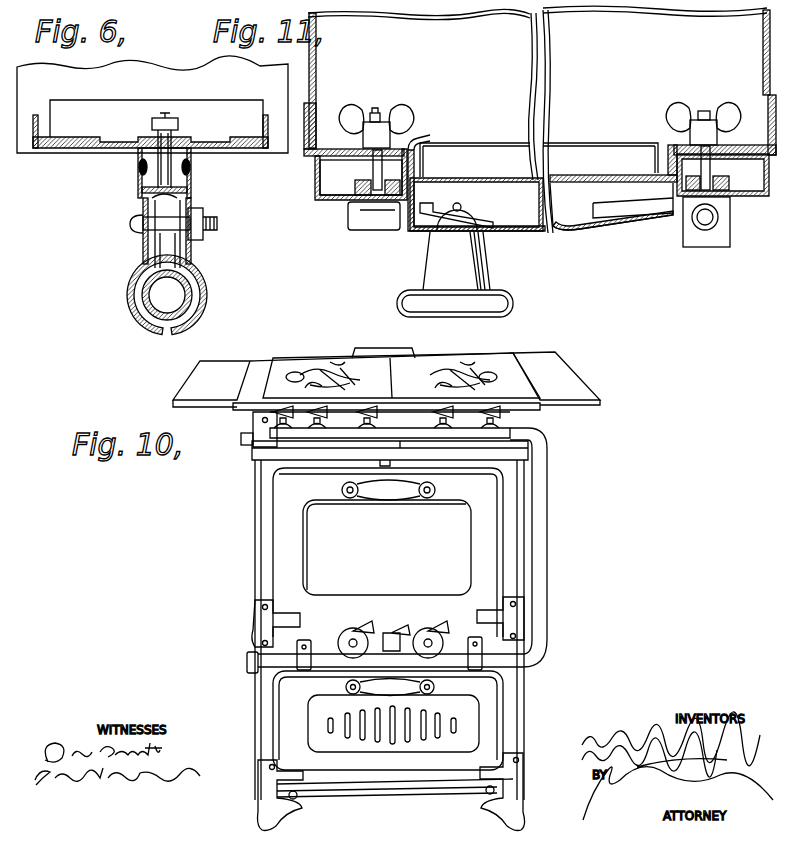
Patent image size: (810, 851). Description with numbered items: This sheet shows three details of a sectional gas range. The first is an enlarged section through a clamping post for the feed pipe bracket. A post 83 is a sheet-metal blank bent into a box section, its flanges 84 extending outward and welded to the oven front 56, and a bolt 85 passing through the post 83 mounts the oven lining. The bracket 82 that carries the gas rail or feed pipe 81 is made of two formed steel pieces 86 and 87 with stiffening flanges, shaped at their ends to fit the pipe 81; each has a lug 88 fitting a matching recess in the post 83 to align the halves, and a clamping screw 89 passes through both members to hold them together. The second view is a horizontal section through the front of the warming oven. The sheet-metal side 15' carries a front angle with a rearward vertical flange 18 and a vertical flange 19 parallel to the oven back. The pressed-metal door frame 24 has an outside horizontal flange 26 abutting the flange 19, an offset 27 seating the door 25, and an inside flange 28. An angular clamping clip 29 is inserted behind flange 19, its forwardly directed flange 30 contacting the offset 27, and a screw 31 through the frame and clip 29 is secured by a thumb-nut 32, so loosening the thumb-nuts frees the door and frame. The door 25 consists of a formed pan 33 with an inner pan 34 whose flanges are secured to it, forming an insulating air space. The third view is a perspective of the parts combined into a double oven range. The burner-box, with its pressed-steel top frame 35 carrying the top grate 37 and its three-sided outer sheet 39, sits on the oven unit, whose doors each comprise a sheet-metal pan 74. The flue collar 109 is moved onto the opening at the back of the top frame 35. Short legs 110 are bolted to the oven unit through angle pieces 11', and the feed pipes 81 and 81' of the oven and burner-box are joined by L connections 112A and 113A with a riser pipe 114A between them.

In FIG. 6, the oven front 56 is at (92, 155).
In FIG. 6, the gas rail or feed pipe 81 is at (147, 315).
In FIG. 10, the gas rail or feed pipe 81 is at (409, 684).
In FIG. 6, the post 83 is at (178, 183).
In FIG. 6, the flange 84 is at (139, 72).
In FIG. 6, the bolt 85 is at (175, 116).
In FIG. 6, the formed steel piece 86 is at (192, 255).
In FIG. 6, the formed steel piece 87 is at (143, 254).
In FIG. 6, the lug 88 is at (130, 193).
In FIG. 6, the clamping screw 89 is at (132, 231).
In FIG. 11, the bracket or support 82 is at (238, 6).
In FIG. 11, the side 15' is at (539, 119).
In FIG. 11, the vertical flange 18 is at (317, 105).
In FIG. 11, the vertical flange 19 is at (745, 160).
In FIG. 11, the door frame 24 is at (336, 205).
In FIG. 11, the door 25 is at (518, 230).
In FIG. 11, the outside horizontal flange 26 is at (315, 188).
In FIG. 11, the offset 27 is at (440, 132).
In FIG. 11, the inside flange 28 is at (425, 160).
In FIG. 11, the angular clamping clip 29 is at (332, 160).
In FIG. 11, the forwardly directed flange 30 is at (416, 138).
In FIG. 11, the screw 31 is at (380, 112).
In FIG. 11, the thumb-nut 32 is at (404, 110).
In FIG. 11, the formed pan 33 is at (610, 228).
In FIG. 11, the pan 34 is at (510, 180).
In FIG. 10, the top frame 35 is at (520, 350).
In FIG. 10, the top grate 37 is at (300, 360).
In FIG. 10, the outer sheet 39 is at (245, 438).
In FIG. 10, the sheet-metal pan 74 is at (390, 620).
In FIG. 10, the feed pipe 81' is at (455, 422).
In FIG. 10, the flue collar 109 is at (382, 346).
In FIG. 10, the short leg 110 is at (507, 807).
In FIG. 10, the angle piece 11' is at (429, 780).
In FIG. 10, the L connection 112A is at (552, 452).
In FIG. 10, the L connection 113A is at (548, 660).
In FIG. 10, the riser pipe 114A is at (550, 567).